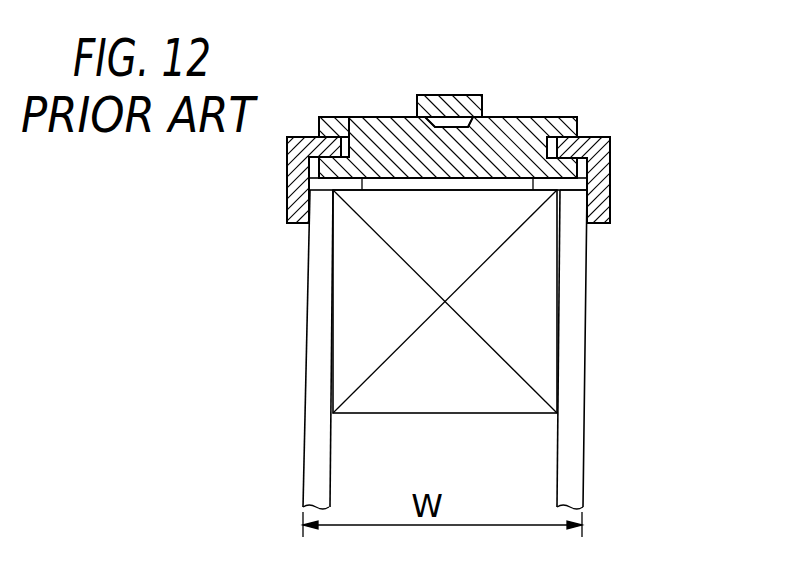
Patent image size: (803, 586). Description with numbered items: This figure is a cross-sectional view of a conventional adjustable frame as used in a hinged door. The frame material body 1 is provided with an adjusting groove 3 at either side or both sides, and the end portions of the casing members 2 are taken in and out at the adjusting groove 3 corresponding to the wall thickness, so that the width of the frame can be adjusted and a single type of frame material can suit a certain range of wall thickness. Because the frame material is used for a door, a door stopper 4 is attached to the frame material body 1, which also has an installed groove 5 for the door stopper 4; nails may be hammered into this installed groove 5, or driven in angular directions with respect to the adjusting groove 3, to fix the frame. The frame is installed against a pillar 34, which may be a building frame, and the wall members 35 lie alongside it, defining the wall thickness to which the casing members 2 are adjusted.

The frame material body 1 is at (520, 143).
The casing members 2 is at (600, 163).
The adjusting groove 3 is at (347, 140).
The door stopper 4 is at (453, 107).
The installed groove 5 is at (436, 123).
The pillar 34 is at (572, 278).
The wall members 35 is at (315, 310).